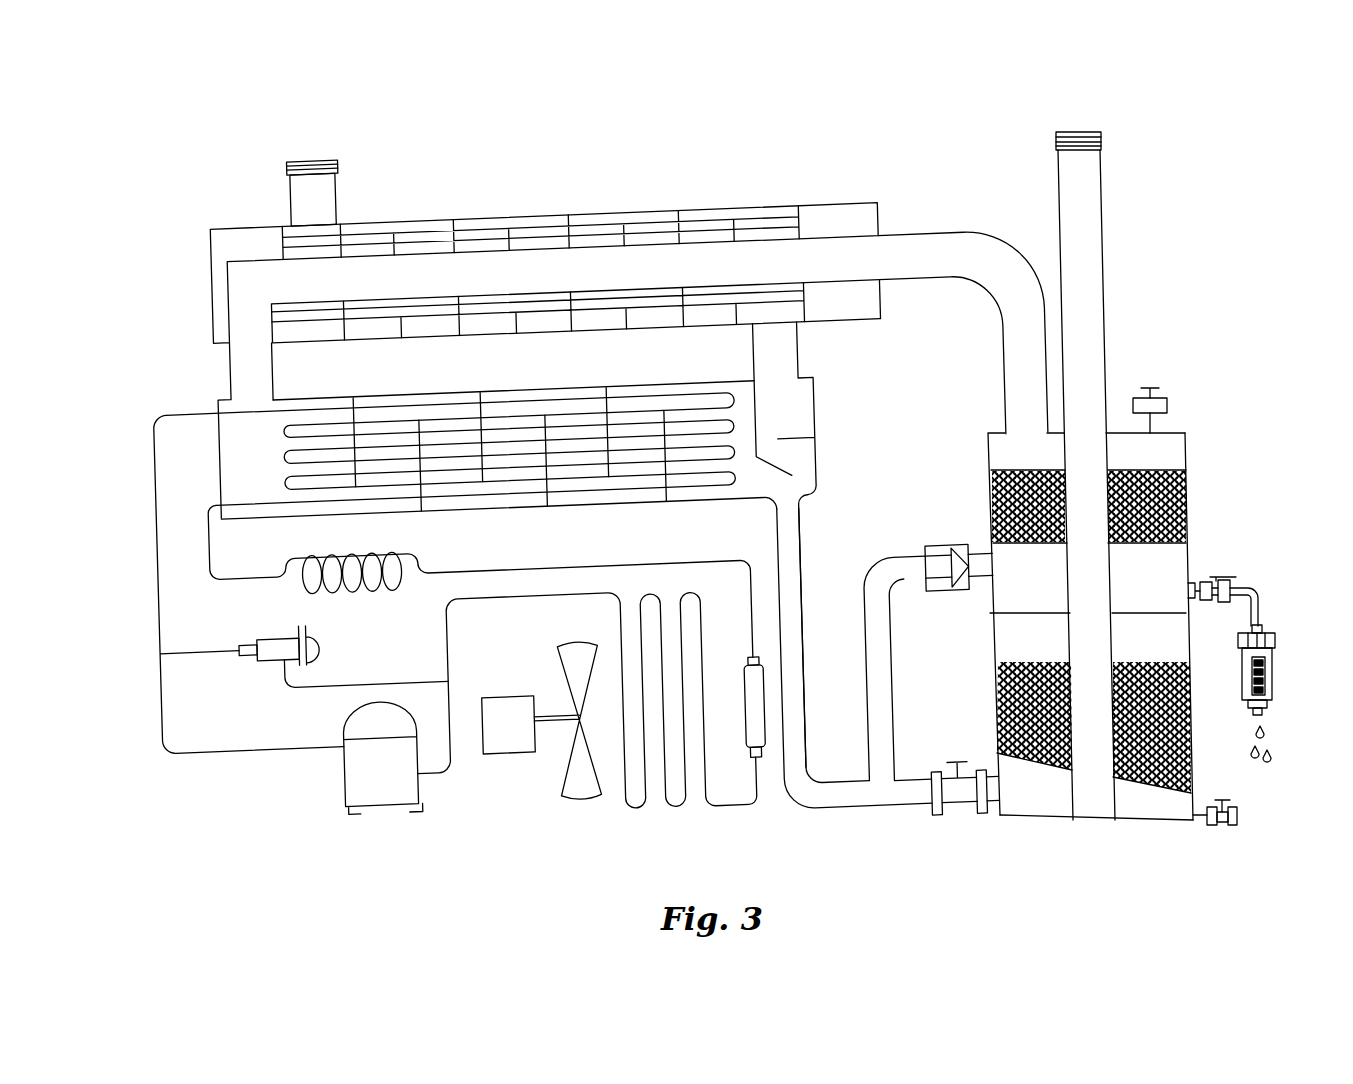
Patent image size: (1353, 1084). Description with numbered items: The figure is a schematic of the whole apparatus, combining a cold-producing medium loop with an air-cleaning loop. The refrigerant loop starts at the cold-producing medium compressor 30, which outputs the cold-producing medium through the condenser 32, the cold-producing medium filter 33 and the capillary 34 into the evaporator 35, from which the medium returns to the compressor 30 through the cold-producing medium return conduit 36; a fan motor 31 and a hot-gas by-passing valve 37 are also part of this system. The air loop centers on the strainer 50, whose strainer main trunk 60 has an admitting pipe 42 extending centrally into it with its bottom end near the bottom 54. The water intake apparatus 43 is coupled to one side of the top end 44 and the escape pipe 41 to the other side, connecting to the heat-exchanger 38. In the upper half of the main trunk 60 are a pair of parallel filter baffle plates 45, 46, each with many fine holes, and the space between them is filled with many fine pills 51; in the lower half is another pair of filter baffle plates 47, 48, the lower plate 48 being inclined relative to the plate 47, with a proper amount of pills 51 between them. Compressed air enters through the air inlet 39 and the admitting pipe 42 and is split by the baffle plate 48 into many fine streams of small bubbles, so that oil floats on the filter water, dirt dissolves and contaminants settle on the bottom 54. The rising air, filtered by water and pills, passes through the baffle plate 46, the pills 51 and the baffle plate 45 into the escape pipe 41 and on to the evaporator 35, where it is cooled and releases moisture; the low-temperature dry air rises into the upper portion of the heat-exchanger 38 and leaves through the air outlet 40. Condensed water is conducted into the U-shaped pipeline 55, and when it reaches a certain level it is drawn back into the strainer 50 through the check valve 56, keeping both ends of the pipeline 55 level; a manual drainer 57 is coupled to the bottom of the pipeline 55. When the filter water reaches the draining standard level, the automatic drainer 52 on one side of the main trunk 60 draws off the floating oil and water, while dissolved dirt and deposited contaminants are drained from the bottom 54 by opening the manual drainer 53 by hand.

The cold-producing medium compressor 30 is at (385, 802).
The fan motor 31 is at (510, 755).
The condenser 32 is at (636, 808).
The cold-producing medium filter 33 is at (760, 762).
The capillary 34 is at (388, 556).
The evaporator 35 is at (520, 393).
The cold-producing medium return conduit 36 is at (157, 594).
The hot-gas by-passing valve 37 is at (330, 648).
The heat-exchanger 38 is at (598, 222).
The air inlet 39 is at (1078, 128).
The air outlet 40 is at (312, 148).
The escape pipe 41 is at (920, 240).
The admitting pipe 42 is at (1104, 272).
The water intake apparatus 43 is at (1165, 395).
The top end 44 is at (1186, 425).
The filter baffle plate 45 is at (1190, 466).
The filter baffle plate 46 is at (1192, 542).
The filter baffle plate 47 is at (1177, 612).
The filter baffle plate 48 is at (1197, 795).
The strainer 50 is at (1068, 824).
The fine pills 51 is at (1192, 500).
The automatic drainer 52 is at (1277, 652).
The manual drainer 53 is at (1223, 828).
The bottom 54 is at (1115, 824).
The U-shaped pipeline 55 is at (800, 552).
The check valve 56 is at (934, 546).
The manual drainer 57 is at (944, 808).
The strainer main trunk 60 is at (992, 648).